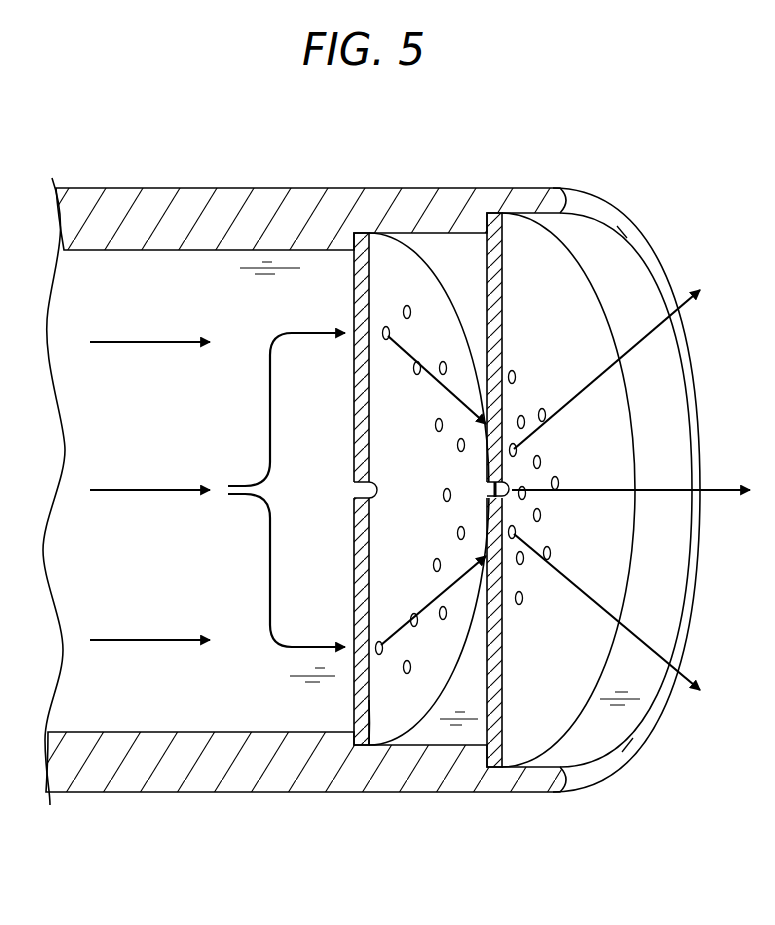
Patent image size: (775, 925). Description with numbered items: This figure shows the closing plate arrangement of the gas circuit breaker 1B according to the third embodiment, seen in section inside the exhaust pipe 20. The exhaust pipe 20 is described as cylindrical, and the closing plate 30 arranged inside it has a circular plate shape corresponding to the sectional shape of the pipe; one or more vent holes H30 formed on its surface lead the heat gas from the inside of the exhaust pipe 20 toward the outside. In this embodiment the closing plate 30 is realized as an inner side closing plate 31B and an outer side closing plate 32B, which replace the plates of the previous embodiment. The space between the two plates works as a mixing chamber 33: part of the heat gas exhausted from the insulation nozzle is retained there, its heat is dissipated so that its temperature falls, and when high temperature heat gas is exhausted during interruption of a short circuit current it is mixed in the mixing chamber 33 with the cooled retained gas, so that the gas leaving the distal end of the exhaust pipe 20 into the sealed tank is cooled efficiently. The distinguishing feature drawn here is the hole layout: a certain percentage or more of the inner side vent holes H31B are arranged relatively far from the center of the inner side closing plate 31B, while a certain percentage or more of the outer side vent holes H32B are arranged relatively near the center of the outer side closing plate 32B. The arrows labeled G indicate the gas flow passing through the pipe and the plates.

The gas circuit breaker 1B is at (396, 475).
The exhaust pipe 20 is at (197, 217).
The closing plate 30 is at (494, 426).
The inner side closing plate 31B is at (428, 293).
The outer side closing plate 32B is at (521, 260).
The mixing chamber 33 is at (432, 724).
The vent hole H30 is at (398, 379).
The inner side vent holes H31B is at (383, 331).
The outer side vent holes H32B is at (509, 374).
The gas flow G is at (145, 491).